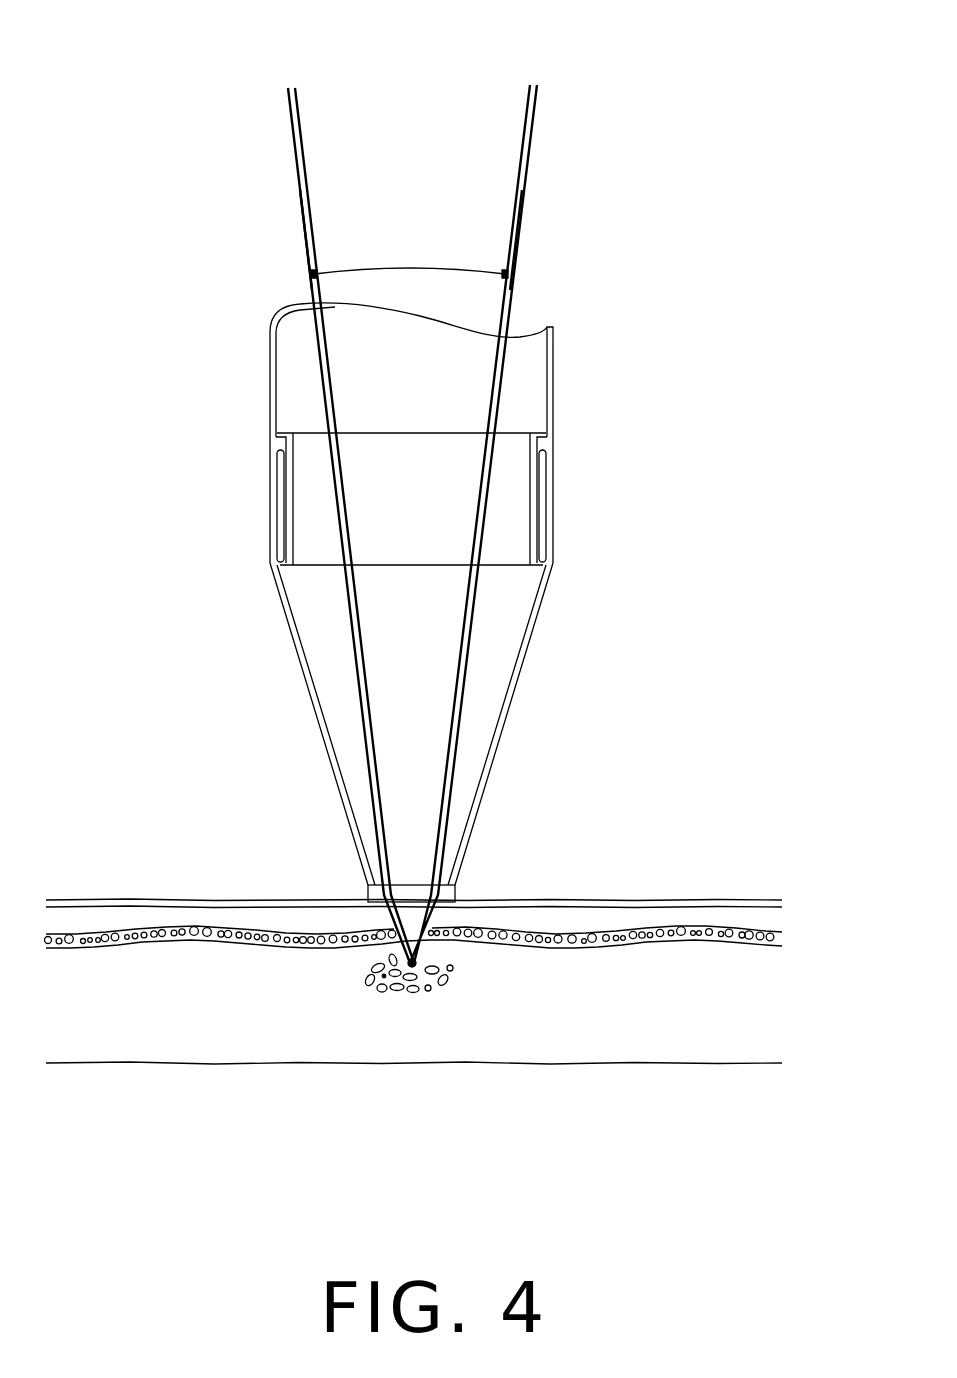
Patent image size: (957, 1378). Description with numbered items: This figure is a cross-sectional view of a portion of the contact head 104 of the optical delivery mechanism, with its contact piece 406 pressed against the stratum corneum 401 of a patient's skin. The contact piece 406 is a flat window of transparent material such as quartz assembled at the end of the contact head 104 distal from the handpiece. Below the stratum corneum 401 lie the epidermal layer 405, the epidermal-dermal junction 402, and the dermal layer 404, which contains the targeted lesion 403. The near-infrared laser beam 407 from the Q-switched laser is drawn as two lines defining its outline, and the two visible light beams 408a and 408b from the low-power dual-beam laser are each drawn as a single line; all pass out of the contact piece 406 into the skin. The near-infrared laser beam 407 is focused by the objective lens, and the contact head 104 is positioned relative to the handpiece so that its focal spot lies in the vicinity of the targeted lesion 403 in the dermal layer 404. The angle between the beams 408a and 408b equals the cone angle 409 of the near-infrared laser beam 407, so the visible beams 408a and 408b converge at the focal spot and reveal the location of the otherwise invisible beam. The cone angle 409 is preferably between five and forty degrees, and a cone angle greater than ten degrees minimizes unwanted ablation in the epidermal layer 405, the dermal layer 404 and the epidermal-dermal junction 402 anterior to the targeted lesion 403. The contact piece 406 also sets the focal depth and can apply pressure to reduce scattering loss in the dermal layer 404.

The contact head 104 is at (540, 713).
The stratum corneum 401 is at (673, 906).
The epidermal-dermal junction 402 is at (220, 935).
The targeted lesion 403 is at (445, 988).
The dermal layer 404 is at (275, 1010).
The epidermal layer 405 is at (582, 921).
The contact piece 406 is at (368, 893).
The near-infrared laser beam 407 is at (302, 225).
The first visible light beam 408a is at (307, 153).
The second visible light beam 408b is at (520, 163).
The cone angle 409 is at (409, 253).